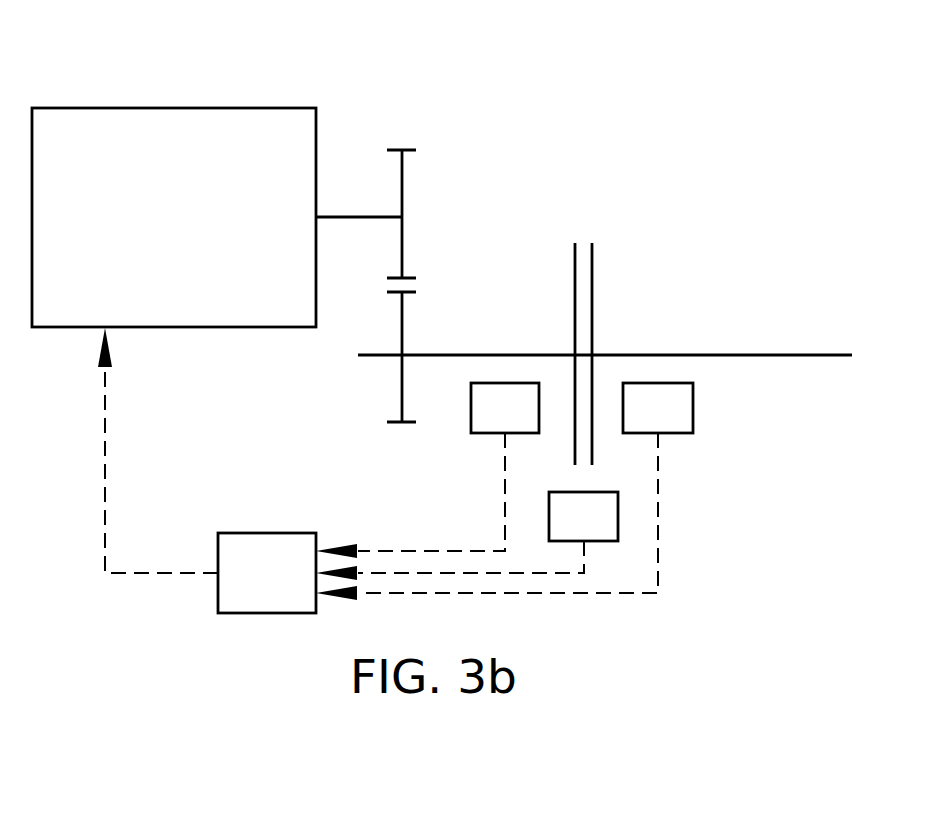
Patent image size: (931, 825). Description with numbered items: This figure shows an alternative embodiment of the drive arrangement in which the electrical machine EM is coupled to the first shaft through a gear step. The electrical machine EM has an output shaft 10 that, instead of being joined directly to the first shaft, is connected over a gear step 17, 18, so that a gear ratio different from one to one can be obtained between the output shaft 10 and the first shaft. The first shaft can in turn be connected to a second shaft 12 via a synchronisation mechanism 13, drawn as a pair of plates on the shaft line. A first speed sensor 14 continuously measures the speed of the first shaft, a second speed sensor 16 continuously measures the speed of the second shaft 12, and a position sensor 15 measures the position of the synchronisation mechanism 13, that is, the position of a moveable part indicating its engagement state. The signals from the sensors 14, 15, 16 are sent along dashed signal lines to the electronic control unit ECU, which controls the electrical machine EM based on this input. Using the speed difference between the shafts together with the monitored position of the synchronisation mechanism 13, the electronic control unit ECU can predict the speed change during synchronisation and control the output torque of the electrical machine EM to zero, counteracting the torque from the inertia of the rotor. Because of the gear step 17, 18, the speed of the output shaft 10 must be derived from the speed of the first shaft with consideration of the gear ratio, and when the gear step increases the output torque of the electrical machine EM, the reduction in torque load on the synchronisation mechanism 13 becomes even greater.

The electrical machine EM is at (142, 108).
The output shaft 10 is at (362, 215).
The gear step 17 is at (402, 190).
The gear step 18 is at (402, 323).
The second shaft 12 is at (788, 353).
The synchronisation mechanism 13 is at (573, 263).
The first speed sensor 14 is at (505, 383).
The position sensor 15 is at (618, 513).
The second speed sensor 16 is at (693, 407).
The electronic control unit ECU is at (267, 573).